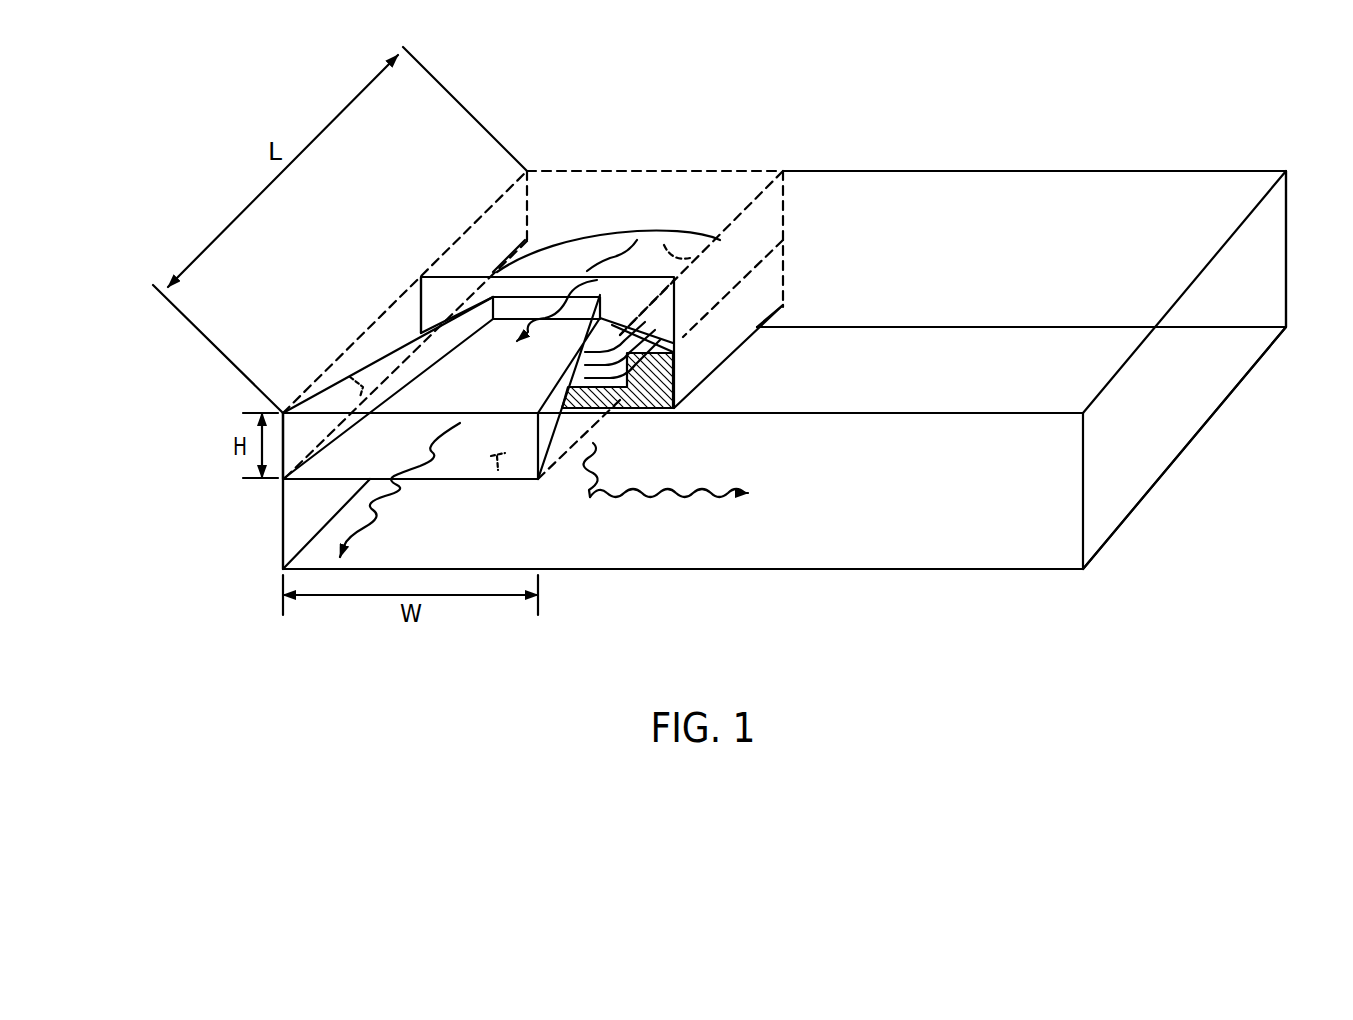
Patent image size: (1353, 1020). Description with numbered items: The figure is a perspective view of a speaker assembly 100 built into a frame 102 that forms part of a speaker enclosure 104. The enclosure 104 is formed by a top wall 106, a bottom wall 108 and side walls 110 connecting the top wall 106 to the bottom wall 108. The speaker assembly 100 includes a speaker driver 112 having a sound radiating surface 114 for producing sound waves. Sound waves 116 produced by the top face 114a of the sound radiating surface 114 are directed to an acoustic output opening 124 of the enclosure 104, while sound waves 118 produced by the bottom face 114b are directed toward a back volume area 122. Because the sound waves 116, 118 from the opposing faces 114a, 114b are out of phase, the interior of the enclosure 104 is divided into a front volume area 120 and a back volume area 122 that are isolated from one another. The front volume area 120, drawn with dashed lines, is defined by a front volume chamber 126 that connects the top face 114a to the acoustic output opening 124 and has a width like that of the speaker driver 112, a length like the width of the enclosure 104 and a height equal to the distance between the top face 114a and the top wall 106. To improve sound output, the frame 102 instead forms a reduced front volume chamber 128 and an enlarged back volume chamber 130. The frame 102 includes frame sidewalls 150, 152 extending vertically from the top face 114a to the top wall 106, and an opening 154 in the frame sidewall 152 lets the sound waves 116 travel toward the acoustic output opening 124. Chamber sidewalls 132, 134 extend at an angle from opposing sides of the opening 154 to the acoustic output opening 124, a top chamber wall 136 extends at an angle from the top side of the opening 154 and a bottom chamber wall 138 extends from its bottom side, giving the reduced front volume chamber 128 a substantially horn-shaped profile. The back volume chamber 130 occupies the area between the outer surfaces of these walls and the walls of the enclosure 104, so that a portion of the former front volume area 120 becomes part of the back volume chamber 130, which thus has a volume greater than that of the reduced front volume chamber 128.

The speaker assembly 100 is at (489, 97).
The frame 102 is at (758, 224).
The speaker enclosure 104 is at (1144, 165).
The top wall 106 is at (961, 206).
The bottom wall 108 is at (1072, 361).
The side walls 110 is at (1032, 207).
The speaker driver 112 is at (548, 257).
The sound radiating surface 114 is at (565, 250).
The top face 114a is at (598, 247).
The bottom face 114b is at (687, 240).
The sound waves 116 is at (521, 352).
The sound waves 118 is at (699, 491).
The front volume area 120 is at (661, 158).
The back volume area 122 is at (1009, 500).
The acoustic output opening 124 is at (439, 481).
The front volume chamber 126 is at (377, 315).
The reduced front volume chamber 128 is at (308, 392).
The back volume chamber 130 is at (686, 573).
The chamber sidewall 132 is at (556, 420).
The chamber sidewall 134 is at (352, 381).
The top chamber wall 136 is at (488, 352).
The bottom chamber wall 138 is at (498, 478).
The frame sidewall 150 is at (726, 264).
The frame sidewall 152 is at (623, 302).
The opening 154 is at (500, 297).